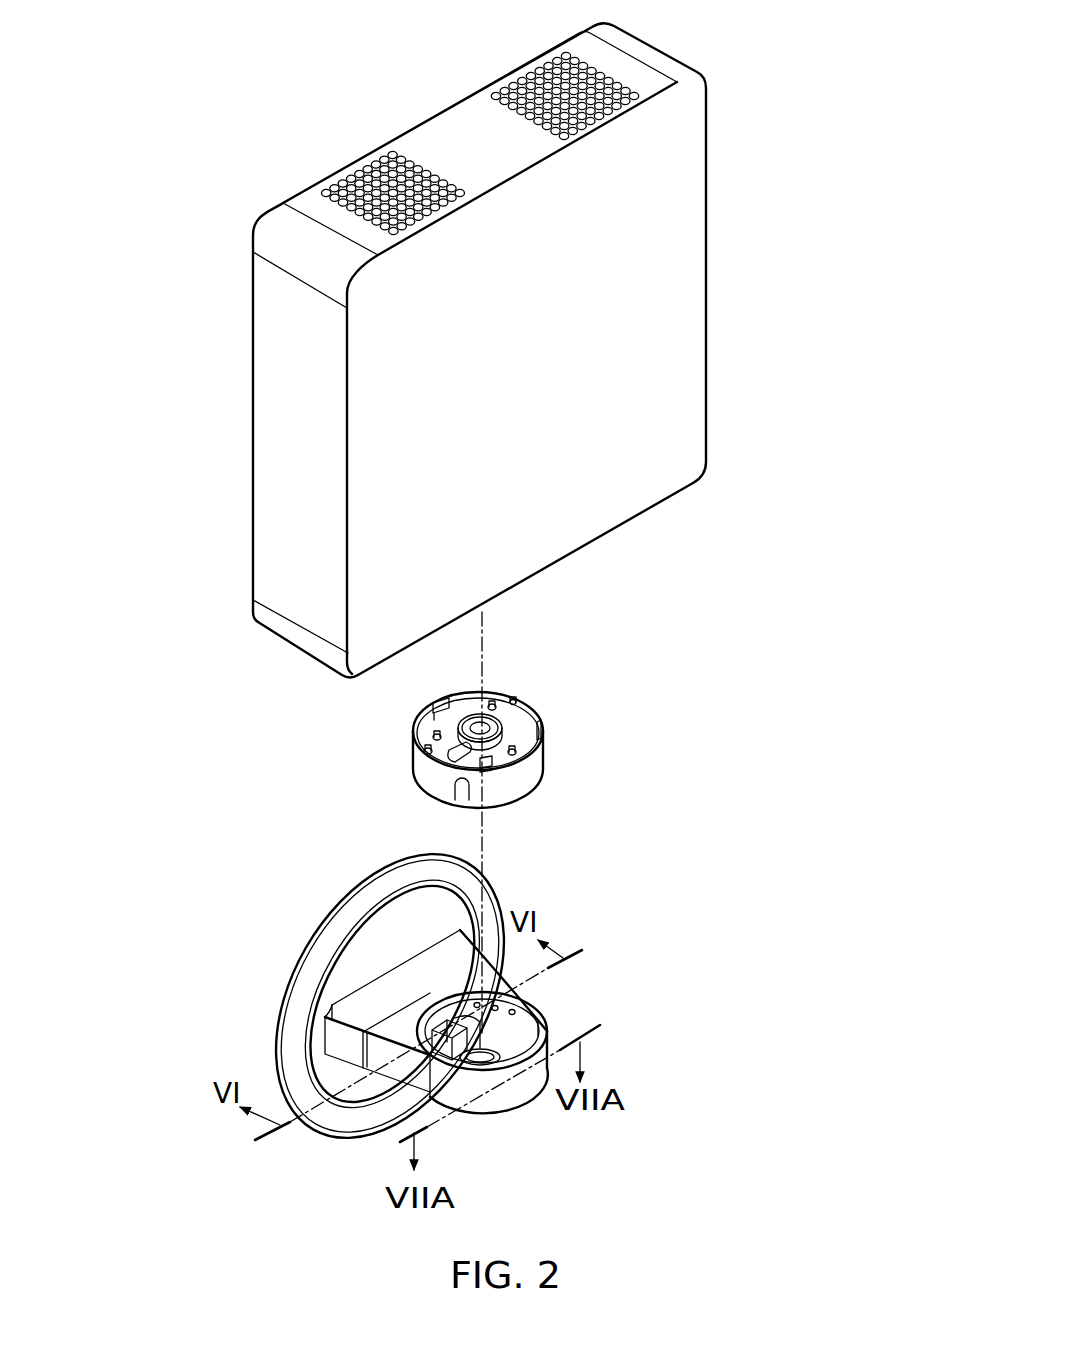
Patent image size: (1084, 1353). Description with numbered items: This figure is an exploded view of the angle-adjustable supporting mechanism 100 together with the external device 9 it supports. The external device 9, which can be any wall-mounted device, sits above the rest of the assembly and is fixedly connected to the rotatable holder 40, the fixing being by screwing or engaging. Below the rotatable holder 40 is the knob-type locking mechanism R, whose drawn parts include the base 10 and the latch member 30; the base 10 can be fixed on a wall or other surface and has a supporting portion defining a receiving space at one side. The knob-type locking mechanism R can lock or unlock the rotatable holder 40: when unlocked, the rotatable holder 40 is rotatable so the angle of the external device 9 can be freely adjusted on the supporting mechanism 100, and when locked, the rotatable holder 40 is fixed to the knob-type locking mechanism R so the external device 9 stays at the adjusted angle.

The external device 9 is at (718, 296).
The angle-adjustable supporting mechanism 100 is at (474, 935).
The rotatable holder 40 is at (556, 757).
The base 10 is at (489, 1021).
The latch member 30 is at (542, 1031).
The knob-type locking mechanism R is at (308, 912).